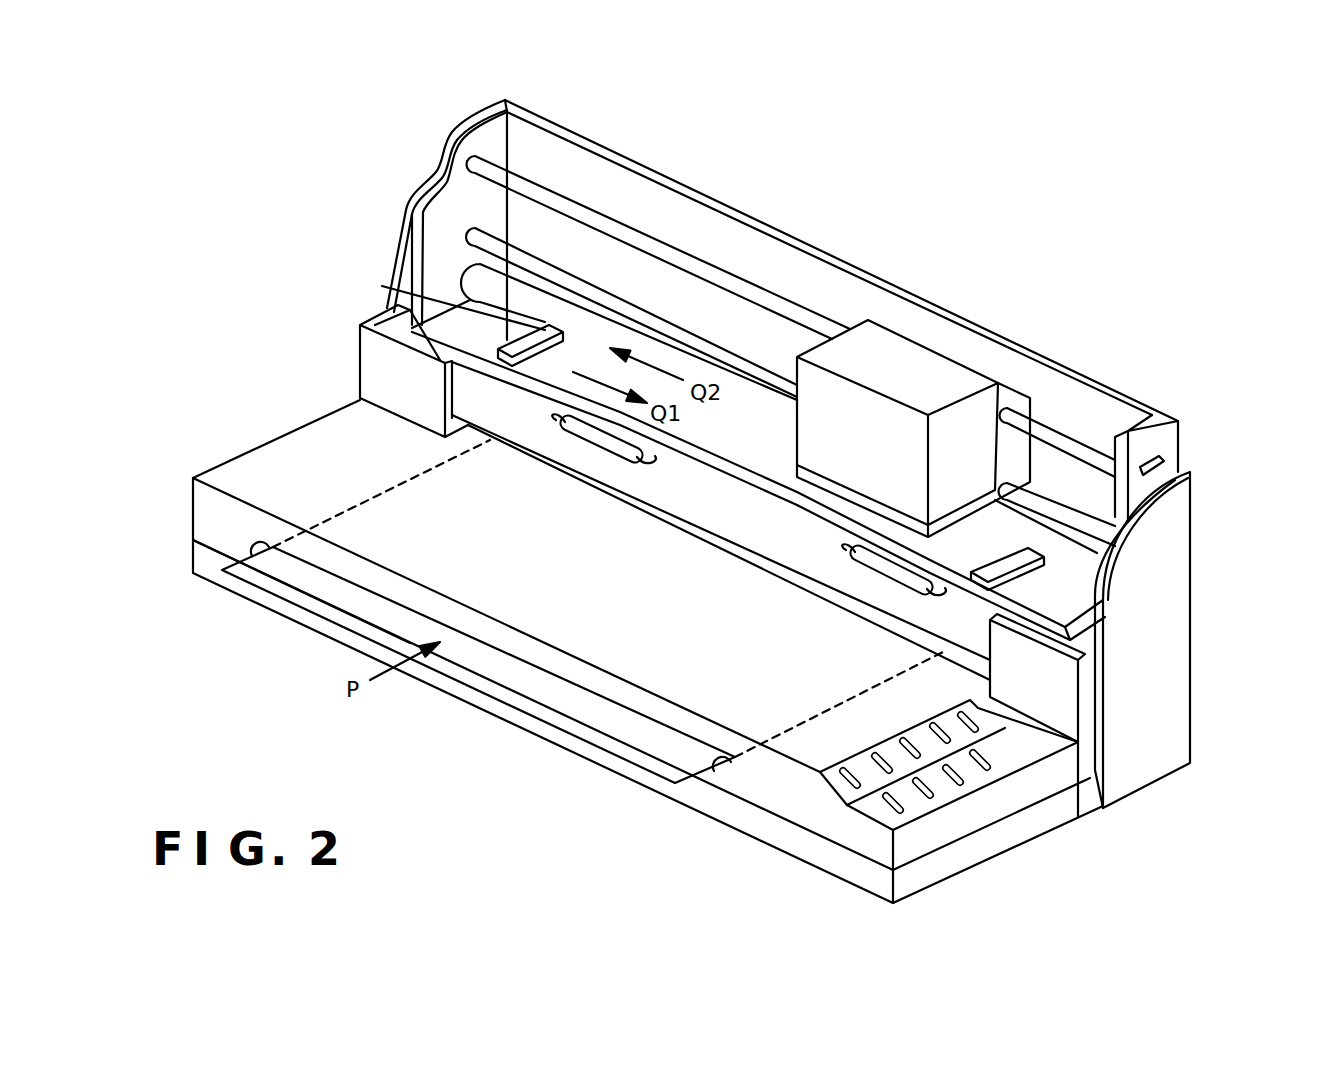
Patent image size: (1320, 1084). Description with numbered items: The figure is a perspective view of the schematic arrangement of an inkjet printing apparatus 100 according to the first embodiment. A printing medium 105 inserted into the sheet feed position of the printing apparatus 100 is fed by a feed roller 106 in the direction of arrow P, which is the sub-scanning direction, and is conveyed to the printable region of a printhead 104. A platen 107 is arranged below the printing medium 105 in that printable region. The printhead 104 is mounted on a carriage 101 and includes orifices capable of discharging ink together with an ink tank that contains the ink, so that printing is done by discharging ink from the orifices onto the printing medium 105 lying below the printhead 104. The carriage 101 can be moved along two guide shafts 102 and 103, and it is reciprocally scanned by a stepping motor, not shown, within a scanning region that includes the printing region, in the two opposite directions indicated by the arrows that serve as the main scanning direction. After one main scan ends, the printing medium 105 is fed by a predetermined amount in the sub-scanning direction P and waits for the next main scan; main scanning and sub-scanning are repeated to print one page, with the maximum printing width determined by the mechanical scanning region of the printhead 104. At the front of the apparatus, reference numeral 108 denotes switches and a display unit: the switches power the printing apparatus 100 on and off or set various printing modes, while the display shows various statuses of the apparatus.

The printing apparatus 100 is at (660, 762).
The carriage 101 is at (1013, 457).
The guide shaft 102 is at (580, 207).
The guide shaft 103 is at (640, 313).
The printhead 104 is at (902, 370).
The printing medium 105 is at (620, 750).
The feed roller 106 is at (1076, 556).
The platen 107 is at (500, 320).
The switches and display unit 108 is at (980, 790).